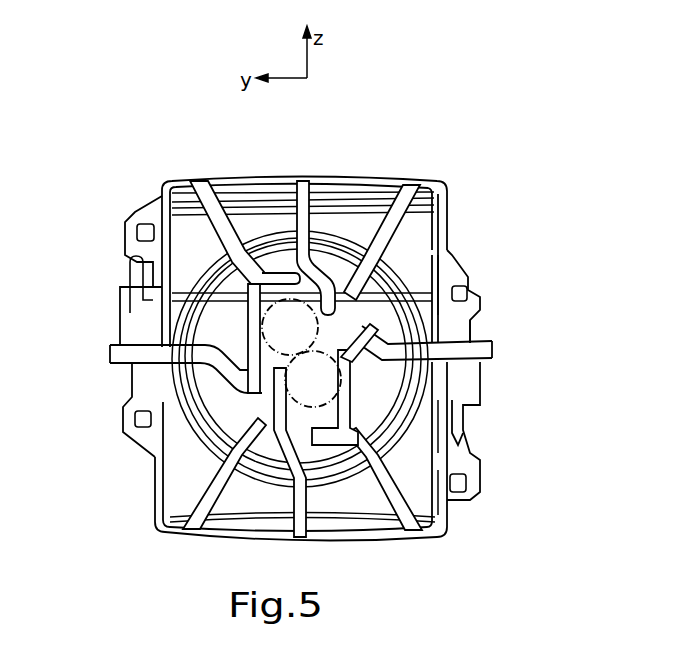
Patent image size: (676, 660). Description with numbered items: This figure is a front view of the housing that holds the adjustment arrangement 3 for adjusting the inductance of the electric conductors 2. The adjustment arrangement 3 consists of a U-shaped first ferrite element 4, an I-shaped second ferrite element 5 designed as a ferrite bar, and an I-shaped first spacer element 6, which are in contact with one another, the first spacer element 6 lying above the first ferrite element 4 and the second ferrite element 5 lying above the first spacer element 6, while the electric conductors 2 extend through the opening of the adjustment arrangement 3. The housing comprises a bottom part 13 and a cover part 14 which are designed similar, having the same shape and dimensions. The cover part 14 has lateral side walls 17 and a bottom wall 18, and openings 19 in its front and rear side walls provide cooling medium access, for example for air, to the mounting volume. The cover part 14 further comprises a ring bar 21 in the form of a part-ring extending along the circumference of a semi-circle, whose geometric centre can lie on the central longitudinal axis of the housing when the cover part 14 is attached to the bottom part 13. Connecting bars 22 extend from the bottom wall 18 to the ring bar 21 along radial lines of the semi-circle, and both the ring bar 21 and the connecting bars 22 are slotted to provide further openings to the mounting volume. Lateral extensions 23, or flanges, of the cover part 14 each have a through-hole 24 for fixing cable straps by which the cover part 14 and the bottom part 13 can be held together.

The electric conductors 2 is at (287, 341).
The adjustment arrangement 3 is at (423, 503).
The first ferrite element 4 is at (417, 462).
The second ferrite element 5 is at (420, 273).
The first spacer element 6 is at (437, 301).
The bottom part 13 is at (325, 531).
The cover part 14 is at (333, 182).
The lateral side walls 17 is at (125, 238).
The bottom wall 18 is at (393, 180).
The openings 19 is at (188, 243).
The ring bar 21 is at (393, 267).
The connecting bars 22 is at (212, 192).
The lateral extensions 23 is at (137, 210).
The through-hole 24 is at (143, 230).